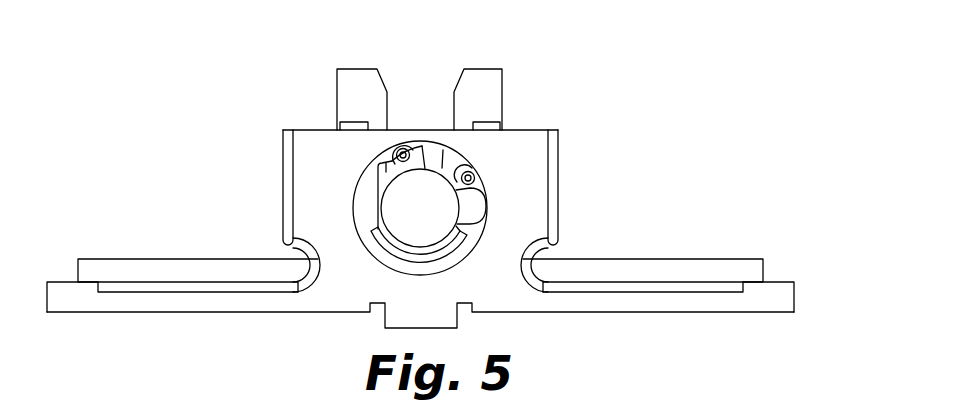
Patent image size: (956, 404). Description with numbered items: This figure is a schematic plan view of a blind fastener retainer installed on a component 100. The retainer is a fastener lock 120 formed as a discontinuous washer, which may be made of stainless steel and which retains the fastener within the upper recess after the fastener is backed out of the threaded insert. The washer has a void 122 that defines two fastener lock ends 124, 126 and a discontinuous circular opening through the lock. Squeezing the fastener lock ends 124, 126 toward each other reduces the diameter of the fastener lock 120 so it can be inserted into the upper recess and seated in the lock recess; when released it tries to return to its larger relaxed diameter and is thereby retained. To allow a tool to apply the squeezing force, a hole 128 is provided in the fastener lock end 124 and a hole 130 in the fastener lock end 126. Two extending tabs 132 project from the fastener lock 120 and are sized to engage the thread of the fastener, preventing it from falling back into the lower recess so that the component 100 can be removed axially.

The component 100 is at (523, 220).
The fastener lock 120 is at (395, 257).
The void 122 is at (442, 151).
The fastener lock end 124 is at (434, 140).
The fastener lock end 126 is at (473, 174).
The hole 128 is at (418, 148).
The hole 130 is at (484, 186).
The extending tab 132 is at (377, 193).